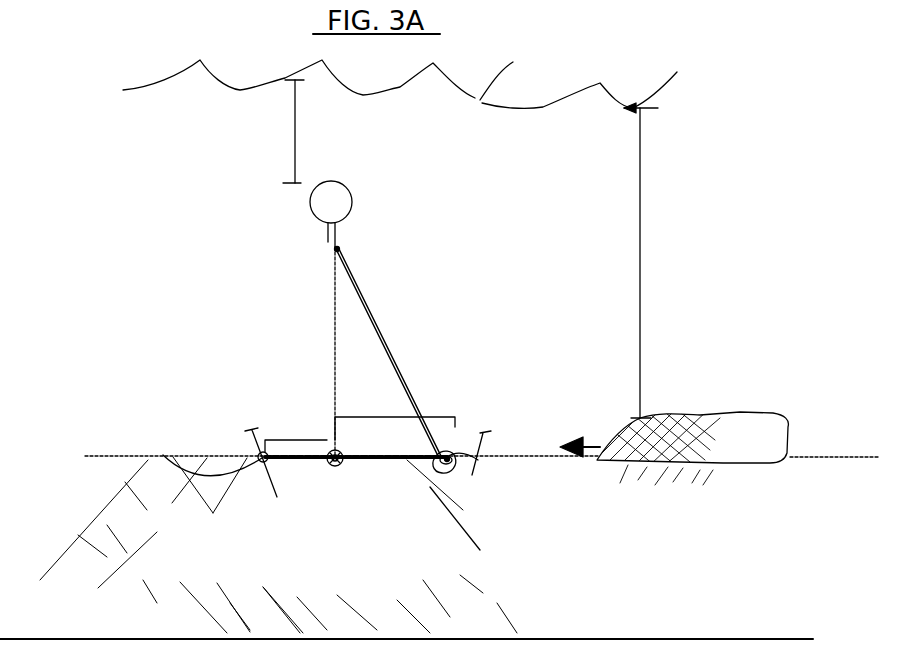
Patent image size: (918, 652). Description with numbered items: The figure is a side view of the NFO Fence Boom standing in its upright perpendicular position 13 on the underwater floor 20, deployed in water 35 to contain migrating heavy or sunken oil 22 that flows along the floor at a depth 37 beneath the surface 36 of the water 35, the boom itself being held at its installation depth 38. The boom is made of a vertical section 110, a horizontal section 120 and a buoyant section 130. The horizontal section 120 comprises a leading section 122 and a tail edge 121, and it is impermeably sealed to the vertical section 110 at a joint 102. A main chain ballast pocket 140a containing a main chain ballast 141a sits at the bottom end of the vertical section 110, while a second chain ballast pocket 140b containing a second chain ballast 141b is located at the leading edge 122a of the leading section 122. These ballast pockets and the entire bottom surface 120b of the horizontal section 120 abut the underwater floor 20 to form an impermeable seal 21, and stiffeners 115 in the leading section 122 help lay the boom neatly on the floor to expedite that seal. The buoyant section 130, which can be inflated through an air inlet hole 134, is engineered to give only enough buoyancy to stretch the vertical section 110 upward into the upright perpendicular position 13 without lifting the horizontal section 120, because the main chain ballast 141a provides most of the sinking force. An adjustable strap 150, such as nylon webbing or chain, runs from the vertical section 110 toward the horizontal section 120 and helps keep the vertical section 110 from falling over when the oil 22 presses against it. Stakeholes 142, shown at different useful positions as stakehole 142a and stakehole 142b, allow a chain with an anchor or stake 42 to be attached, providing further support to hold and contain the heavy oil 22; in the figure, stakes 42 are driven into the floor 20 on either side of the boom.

The upright perpendicular position 13 is at (377, 182).
The underwater floor 20 is at (213, 559).
The impermeable seal 21 is at (505, 482).
The heavy or sunken oil 22 is at (765, 455).
The water 35 is at (178, 182).
The surface of the water 36 is at (400, 83).
The depth 37 is at (641, 258).
The installation depth 38 is at (295, 134).
The stake 42 is at (250, 440).
The joint 102 is at (333, 437).
The vertical section 110 is at (335, 307).
The stiffeners 115 is at (450, 420).
The horizontal section 120 is at (247, 507).
The bottom surface of the horizontal section 120b is at (475, 531).
The tail edge 121 is at (290, 438).
The leading section 122 is at (418, 403).
The leading edge 122a is at (470, 475).
The buoyant section 130 is at (352, 203).
The air inlet hole 134 is at (332, 250).
The main chain ballast pocket 140a is at (343, 468).
The second chain ballast pocket 140b is at (452, 473).
The main chain ballast 141a is at (329, 466).
The second chain ballast 141b is at (433, 490).
The anchor hole 142 is at (163, 455).
The stakehole 142a is at (339, 250).
The stakehole 142b is at (473, 470).
The strap 150 is at (385, 338).